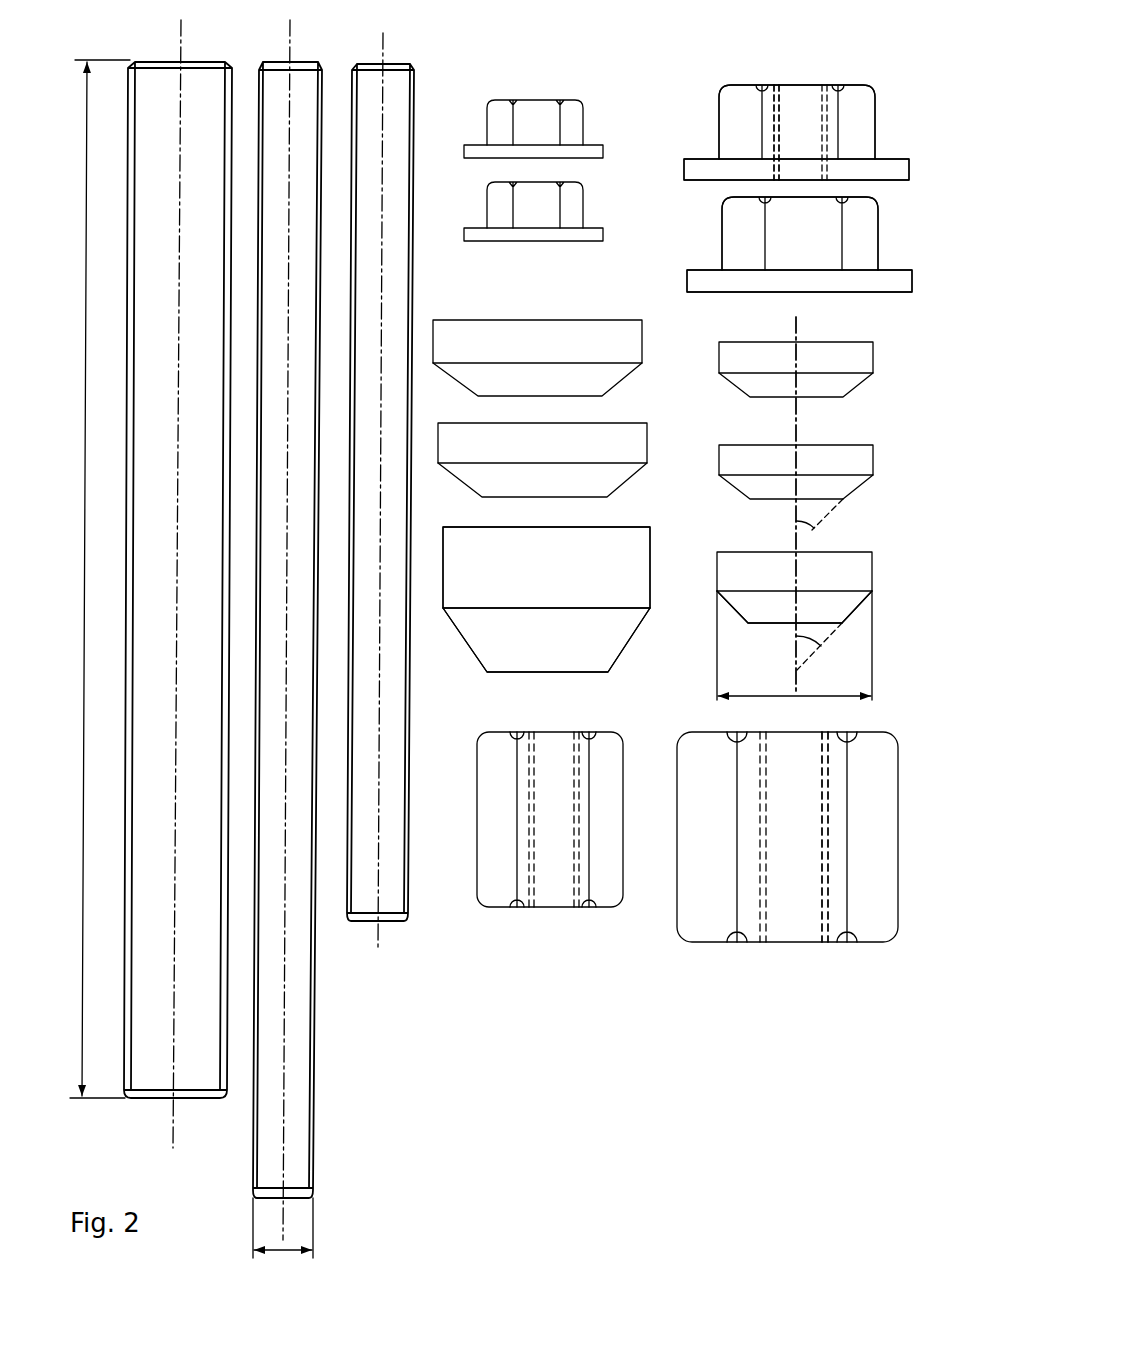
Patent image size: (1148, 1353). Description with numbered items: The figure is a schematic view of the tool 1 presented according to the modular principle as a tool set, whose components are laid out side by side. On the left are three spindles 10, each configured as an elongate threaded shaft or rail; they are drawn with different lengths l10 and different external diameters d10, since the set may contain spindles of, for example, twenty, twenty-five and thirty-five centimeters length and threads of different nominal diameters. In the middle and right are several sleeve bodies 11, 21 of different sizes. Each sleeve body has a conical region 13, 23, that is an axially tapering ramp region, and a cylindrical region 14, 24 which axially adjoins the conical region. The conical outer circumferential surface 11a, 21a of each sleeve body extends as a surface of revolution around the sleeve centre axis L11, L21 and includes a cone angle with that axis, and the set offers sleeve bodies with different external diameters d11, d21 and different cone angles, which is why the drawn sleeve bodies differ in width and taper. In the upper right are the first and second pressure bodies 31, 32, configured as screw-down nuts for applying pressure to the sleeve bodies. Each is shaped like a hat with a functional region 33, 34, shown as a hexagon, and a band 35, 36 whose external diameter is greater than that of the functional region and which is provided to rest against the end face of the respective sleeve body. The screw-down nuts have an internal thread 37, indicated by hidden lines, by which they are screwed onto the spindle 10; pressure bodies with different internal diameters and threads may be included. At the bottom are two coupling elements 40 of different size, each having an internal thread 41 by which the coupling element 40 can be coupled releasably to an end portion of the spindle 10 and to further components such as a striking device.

The tool 1 is at (586, 1108).
The spindle 10 is at (153, 1099).
The length of the spindle l10 is at (83, 585).
The external diameter of the spindle d10 is at (292, 1255).
The sleeve body 11 is at (703, 475).
The sleeve body 21 is at (490, 317).
The conical outer circumferential surface 11a is at (752, 630).
The conical outer circumferential surface 21a is at (740, 619).
The conical region 13 is at (541, 656).
The conical region 23 is at (519, 653).
The cylindrical region 14 is at (546, 567).
The cylindrical region 24 is at (489, 576).
The sleeve centre axis L11 is at (857, 505).
The sleeve centre axis L21 is at (797, 418).
The external diameter of the sleeve body d11 is at (849, 655).
The external diameter of the sleeve body d21 is at (840, 698).
The first pressure body 31 is at (550, 89).
The second pressure body 32 is at (593, 215).
The functional region 33 is at (860, 113).
The functional region 34 is at (870, 250).
The band 35 is at (882, 167).
The band 36 is at (905, 284).
The internal thread 37 is at (783, 100).
The coupling element 40 is at (522, 918).
The internal thread 41 is at (817, 920).